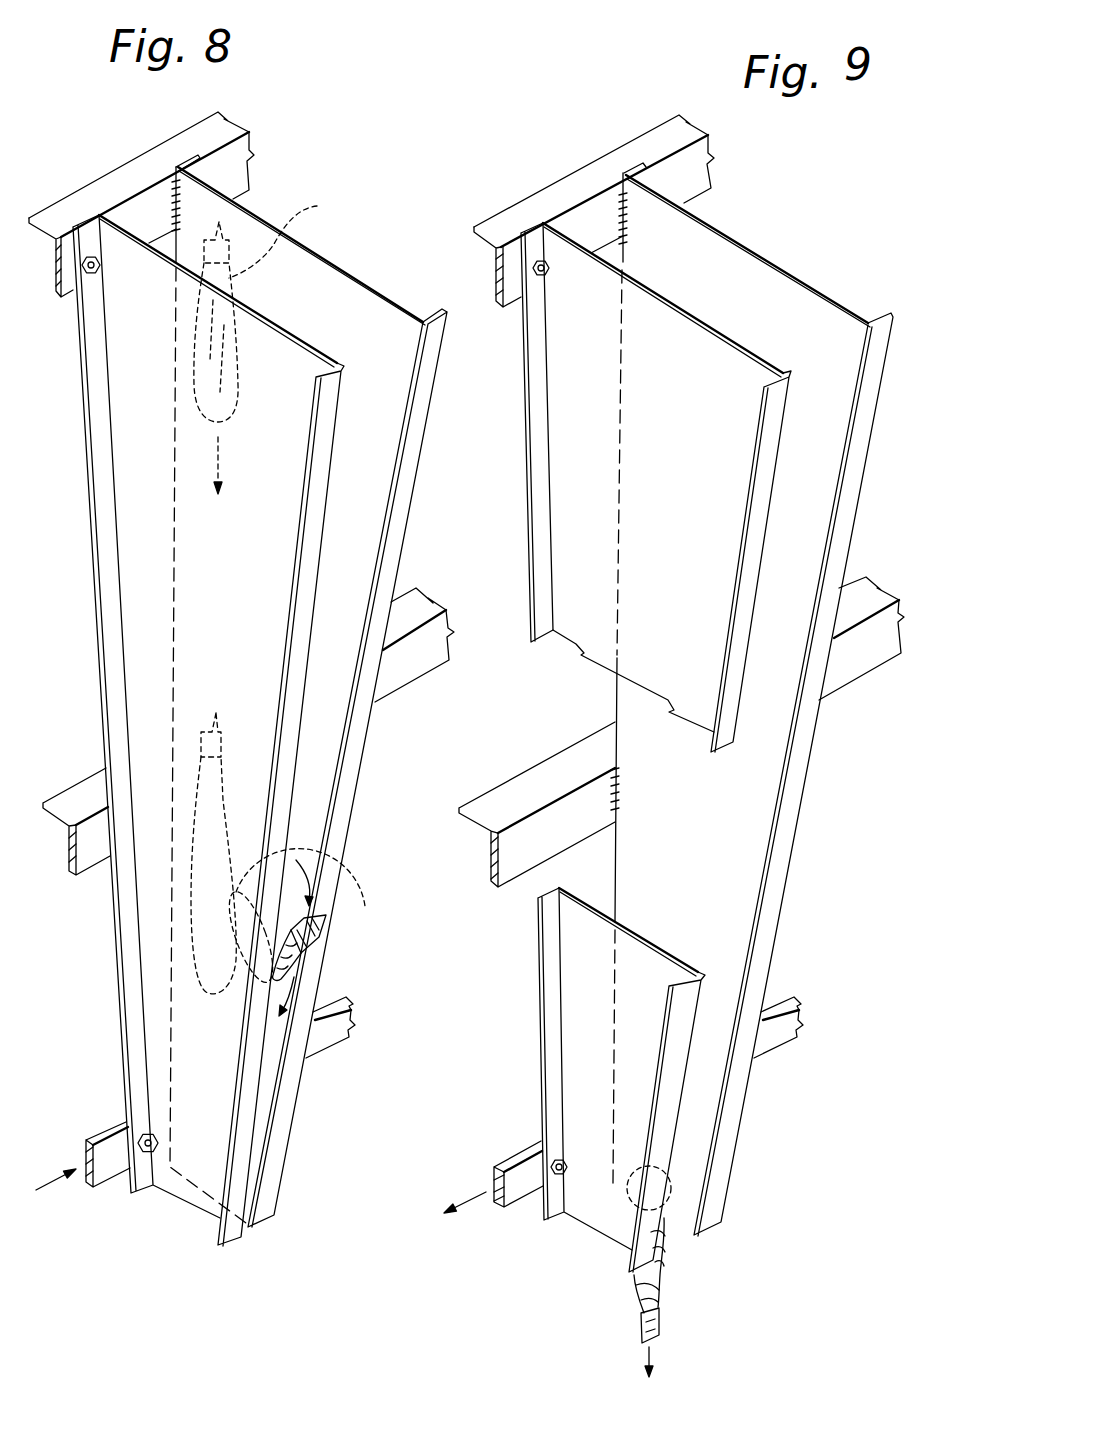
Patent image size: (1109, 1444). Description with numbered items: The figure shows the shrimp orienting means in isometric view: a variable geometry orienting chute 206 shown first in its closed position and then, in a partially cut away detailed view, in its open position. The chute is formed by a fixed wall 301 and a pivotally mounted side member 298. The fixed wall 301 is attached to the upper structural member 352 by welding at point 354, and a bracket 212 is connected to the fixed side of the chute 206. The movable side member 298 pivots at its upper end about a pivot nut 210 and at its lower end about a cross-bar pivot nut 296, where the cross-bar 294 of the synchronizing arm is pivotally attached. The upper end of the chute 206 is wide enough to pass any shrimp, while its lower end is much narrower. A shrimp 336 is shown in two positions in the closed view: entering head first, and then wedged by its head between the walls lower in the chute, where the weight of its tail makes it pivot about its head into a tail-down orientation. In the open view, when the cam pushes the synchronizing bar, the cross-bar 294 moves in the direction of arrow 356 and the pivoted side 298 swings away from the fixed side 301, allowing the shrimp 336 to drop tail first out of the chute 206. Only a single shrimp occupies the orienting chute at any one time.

In FIG. 8, the upper structural member 352 is at (239, 130).
In FIG. 9, the upper structural member 352 is at (700, 147).
In FIG. 8, the welding point 354 is at (173, 226).
In FIG. 9, the welding point 354 is at (612, 217).
In FIG. 8, the shrimp 336 is at (348, 606).
In FIG. 9, the shrimp 336 is at (655, 1282).
In FIG. 8, the pivot nut 210 is at (97, 272).
In FIG. 9, the pivot nut 210 is at (547, 275).
In FIG. 8, the fixed wall 301 is at (408, 458).
In FIG. 9, the fixed wall 301 is at (870, 405).
In FIG. 8, the pivotally mounted side member 298 is at (320, 492).
In FIG. 9, the pivotally mounted side member 298 is at (763, 458).
In FIG. 8, the bracket 212 is at (400, 670).
In FIG. 9, the bracket 212 is at (857, 663).
In FIG. 8, the cross-bar 294 is at (323, 1035).
In FIG. 9, the cross-bar 294 is at (772, 1035).
In FIG. 8, the cross-bar pivot nut 296 is at (157, 1148).
In FIG. 9, the cross-bar pivot nut 296 is at (566, 1174).
In FIG. 9, the variable geometry orienting chute 206 is at (736, 272).
In FIG. 9, the arrow 356 is at (475, 1192).